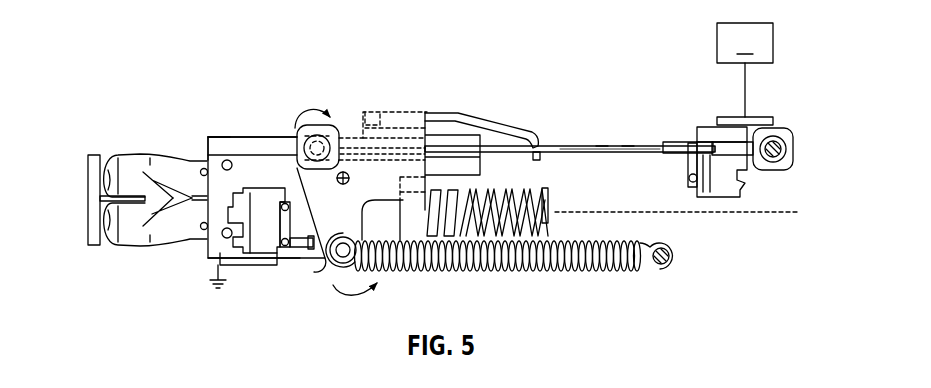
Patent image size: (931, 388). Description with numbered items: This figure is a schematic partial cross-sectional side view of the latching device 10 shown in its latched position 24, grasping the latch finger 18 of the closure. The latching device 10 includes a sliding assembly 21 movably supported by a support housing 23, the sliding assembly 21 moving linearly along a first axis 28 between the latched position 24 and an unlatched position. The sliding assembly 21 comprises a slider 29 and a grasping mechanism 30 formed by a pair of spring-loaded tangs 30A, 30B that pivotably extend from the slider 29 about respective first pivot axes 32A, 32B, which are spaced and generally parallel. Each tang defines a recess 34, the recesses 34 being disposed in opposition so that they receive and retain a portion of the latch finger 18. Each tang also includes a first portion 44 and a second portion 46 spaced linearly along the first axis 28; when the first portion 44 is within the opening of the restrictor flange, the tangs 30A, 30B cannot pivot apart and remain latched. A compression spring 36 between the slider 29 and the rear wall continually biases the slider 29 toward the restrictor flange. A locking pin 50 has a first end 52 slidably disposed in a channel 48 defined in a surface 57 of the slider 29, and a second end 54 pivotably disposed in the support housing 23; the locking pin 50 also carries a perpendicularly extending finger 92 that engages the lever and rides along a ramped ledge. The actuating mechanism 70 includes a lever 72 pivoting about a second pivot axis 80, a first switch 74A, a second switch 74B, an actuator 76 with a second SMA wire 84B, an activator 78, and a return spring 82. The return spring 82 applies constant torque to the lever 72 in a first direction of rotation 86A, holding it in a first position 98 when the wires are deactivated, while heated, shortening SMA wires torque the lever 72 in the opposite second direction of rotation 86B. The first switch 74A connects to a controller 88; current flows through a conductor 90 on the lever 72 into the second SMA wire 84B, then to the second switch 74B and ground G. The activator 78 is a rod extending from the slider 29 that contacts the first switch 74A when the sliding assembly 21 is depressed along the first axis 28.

The latching device 10 is at (152, 52).
The latch finger 18 is at (93, 156).
The sliding assembly 21 is at (190, 116).
The support housing 23 is at (790, 141).
The latched position 24 is at (170, 141).
The first axis 28 is at (594, 211).
The slider 29 is at (284, 147).
The grasping mechanism 30 is at (170, 268).
The tang 30A is at (155, 163).
The tang 30B is at (138, 239).
The first pivot axis 32A is at (217, 137).
The first pivot axis 32B is at (206, 239).
The recess 34 is at (122, 150).
The compression spring 36 is at (498, 191).
The first portion 44 is at (113, 173).
The second portion 46 is at (113, 150).
The channel 48 is at (389, 108).
The locking pin 50 is at (478, 120).
The first end 52 is at (363, 111).
The second end 54 is at (539, 159).
The surface 57 is at (213, 128).
The actuating mechanism 70 is at (602, 140).
The lever 72 is at (328, 268).
The first switch 74A is at (744, 181).
The second switch 74B is at (261, 259).
The actuator 76 is at (628, 140).
The activator 78 is at (551, 142).
The second pivot axis 80 is at (347, 185).
The return spring 82 is at (580, 273).
The second SMA wire 84B is at (606, 154).
The first direction of rotation 86A is at (363, 296).
The second direction of rotation 86B is at (318, 113).
The controller 88 is at (745, 70).
The conductor 90 is at (306, 154).
The finger 92 is at (408, 109).
The first position 98 is at (409, 117).
The ground G is at (217, 290).